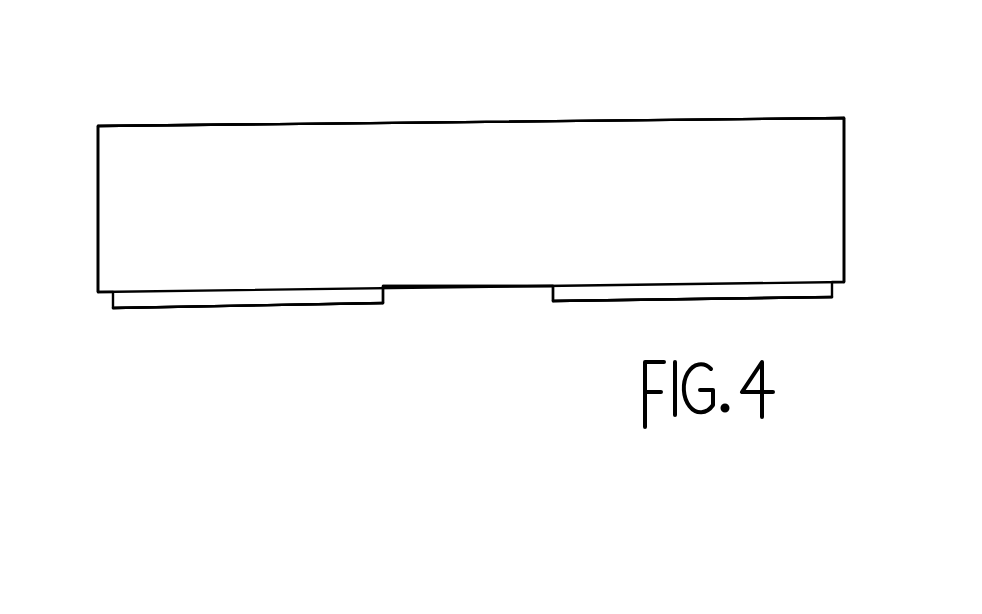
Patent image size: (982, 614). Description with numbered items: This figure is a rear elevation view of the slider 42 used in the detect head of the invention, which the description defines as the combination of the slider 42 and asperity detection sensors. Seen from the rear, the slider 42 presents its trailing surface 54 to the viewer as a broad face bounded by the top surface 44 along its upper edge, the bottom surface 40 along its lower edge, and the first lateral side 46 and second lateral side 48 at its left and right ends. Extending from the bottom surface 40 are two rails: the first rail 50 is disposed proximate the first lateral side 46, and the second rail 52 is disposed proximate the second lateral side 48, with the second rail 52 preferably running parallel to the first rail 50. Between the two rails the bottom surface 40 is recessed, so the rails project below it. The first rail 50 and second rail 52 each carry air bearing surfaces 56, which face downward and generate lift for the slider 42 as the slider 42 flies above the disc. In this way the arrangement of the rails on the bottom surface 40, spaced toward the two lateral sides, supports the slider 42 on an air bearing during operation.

The bottom surface 40 is at (452, 297).
The slider 42 is at (550, 78).
The top surface 44 is at (638, 118).
The first lateral side 46 is at (96, 215).
The second lateral side 48 is at (845, 165).
The first rail 50 is at (160, 313).
The second rail 52 is at (605, 300).
The trailing surface 54 is at (300, 147).
The air bearing surfaces 56 is at (293, 306).